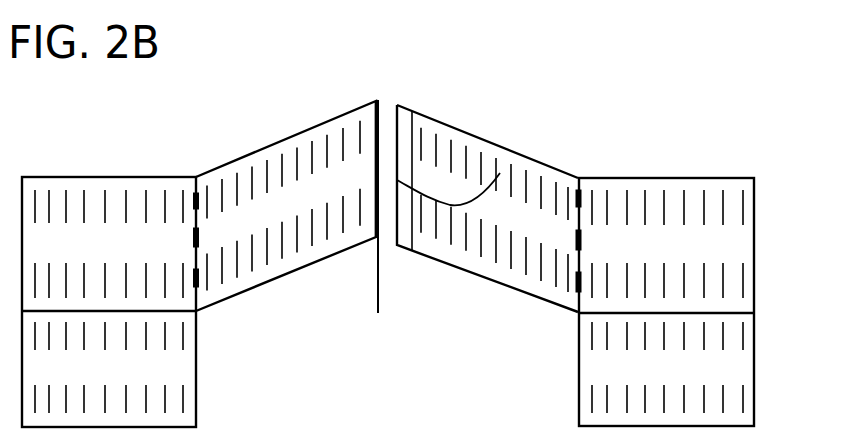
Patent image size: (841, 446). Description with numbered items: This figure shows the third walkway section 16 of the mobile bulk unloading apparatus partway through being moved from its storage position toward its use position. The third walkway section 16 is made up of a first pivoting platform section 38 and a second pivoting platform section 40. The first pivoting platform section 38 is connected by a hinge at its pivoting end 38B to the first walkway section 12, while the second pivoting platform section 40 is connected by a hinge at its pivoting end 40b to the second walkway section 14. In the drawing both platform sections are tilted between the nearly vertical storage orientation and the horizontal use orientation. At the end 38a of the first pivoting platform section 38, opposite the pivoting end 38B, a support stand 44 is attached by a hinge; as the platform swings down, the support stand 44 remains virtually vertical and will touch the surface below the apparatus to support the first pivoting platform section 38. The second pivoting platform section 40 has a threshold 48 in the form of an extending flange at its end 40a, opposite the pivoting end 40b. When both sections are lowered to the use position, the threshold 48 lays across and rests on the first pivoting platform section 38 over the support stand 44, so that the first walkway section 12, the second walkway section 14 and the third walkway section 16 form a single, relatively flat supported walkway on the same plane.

The first walkway section 12 is at (97, 240).
The second walkway section 14 is at (713, 217).
The third walkway section 16 is at (427, 113).
The first pivoting platform section 38 is at (304, 187).
The end of first pivoting platform section 38a is at (378, 170).
The pivoting end of first pivoting platform section 38B is at (195, 215).
The second pivoting platform section 40 is at (527, 193).
The end of second pivoting platform section 40a is at (500, 173).
The pivoting end of second pivoting platform section 40b is at (581, 200).
The support stand 44 is at (380, 292).
The threshold 48 is at (402, 146).